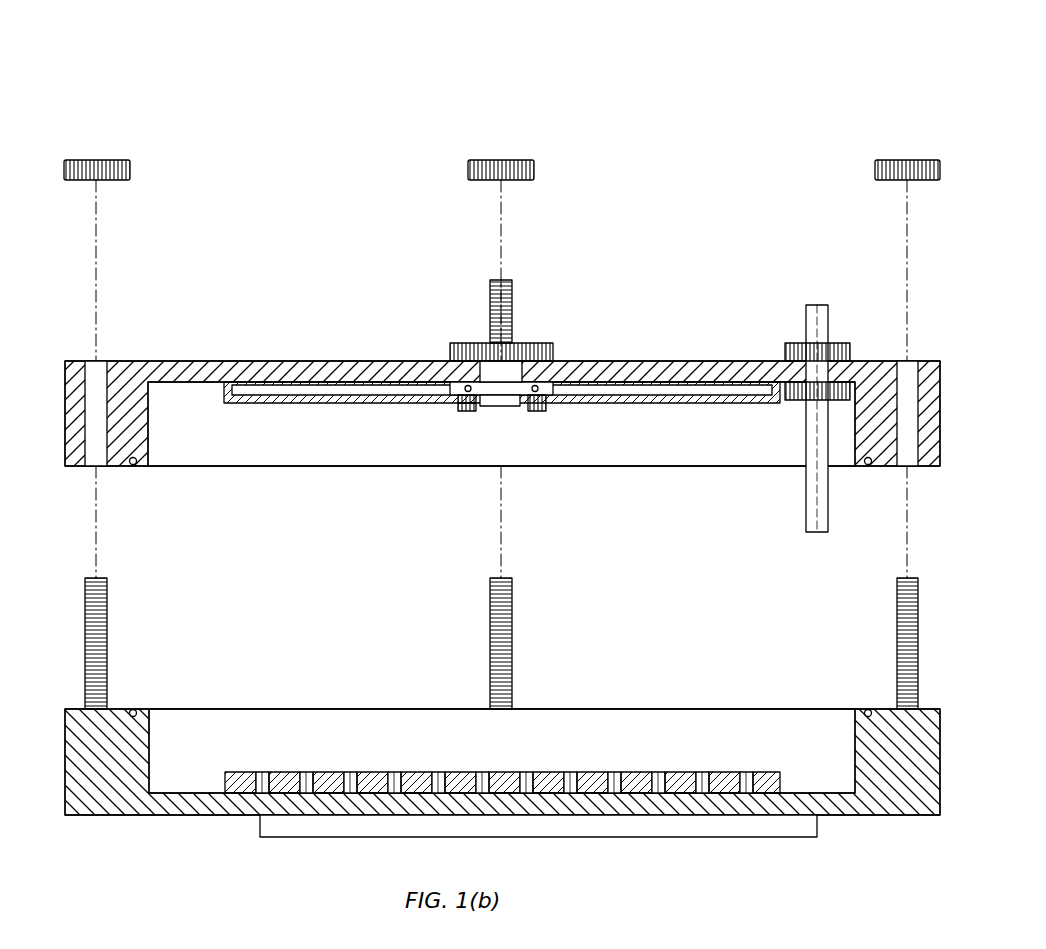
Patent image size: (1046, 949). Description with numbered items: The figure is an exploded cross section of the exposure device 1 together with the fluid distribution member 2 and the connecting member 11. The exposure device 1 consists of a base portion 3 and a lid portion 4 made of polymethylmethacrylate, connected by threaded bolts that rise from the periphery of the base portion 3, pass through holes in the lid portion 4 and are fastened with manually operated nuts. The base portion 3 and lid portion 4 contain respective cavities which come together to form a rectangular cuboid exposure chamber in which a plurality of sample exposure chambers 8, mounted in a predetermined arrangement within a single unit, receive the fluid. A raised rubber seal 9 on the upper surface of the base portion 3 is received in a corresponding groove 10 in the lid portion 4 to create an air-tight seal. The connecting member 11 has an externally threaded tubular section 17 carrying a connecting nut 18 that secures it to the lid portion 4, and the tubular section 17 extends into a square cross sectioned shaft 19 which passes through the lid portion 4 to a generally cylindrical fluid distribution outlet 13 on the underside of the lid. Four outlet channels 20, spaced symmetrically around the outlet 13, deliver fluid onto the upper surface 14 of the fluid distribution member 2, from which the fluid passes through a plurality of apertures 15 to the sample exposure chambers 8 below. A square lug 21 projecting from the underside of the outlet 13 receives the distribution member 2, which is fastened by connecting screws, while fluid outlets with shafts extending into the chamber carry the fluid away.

The exposure device 1 is at (186, 66).
The fluid distribution member 2 is at (726, 422).
The base portion 3 is at (166, 830).
The lid portion 4 is at (163, 336).
The sample exposure chambers 8 is at (700, 772).
The raised rubber seal 9 is at (868, 710).
The groove 10 is at (134, 466).
The connecting member 11 is at (520, 272).
The fluid distribution outlet 13 is at (556, 402).
The surface 14 is at (668, 402).
The apertures 15 is at (350, 405).
The externally threaded tubular section 17 is at (513, 300).
The connecting nut 18 is at (458, 343).
The square cross sectioned shaft 19 is at (512, 374).
The outlet channels 20 is at (460, 404).
The lug 21 is at (500, 408).